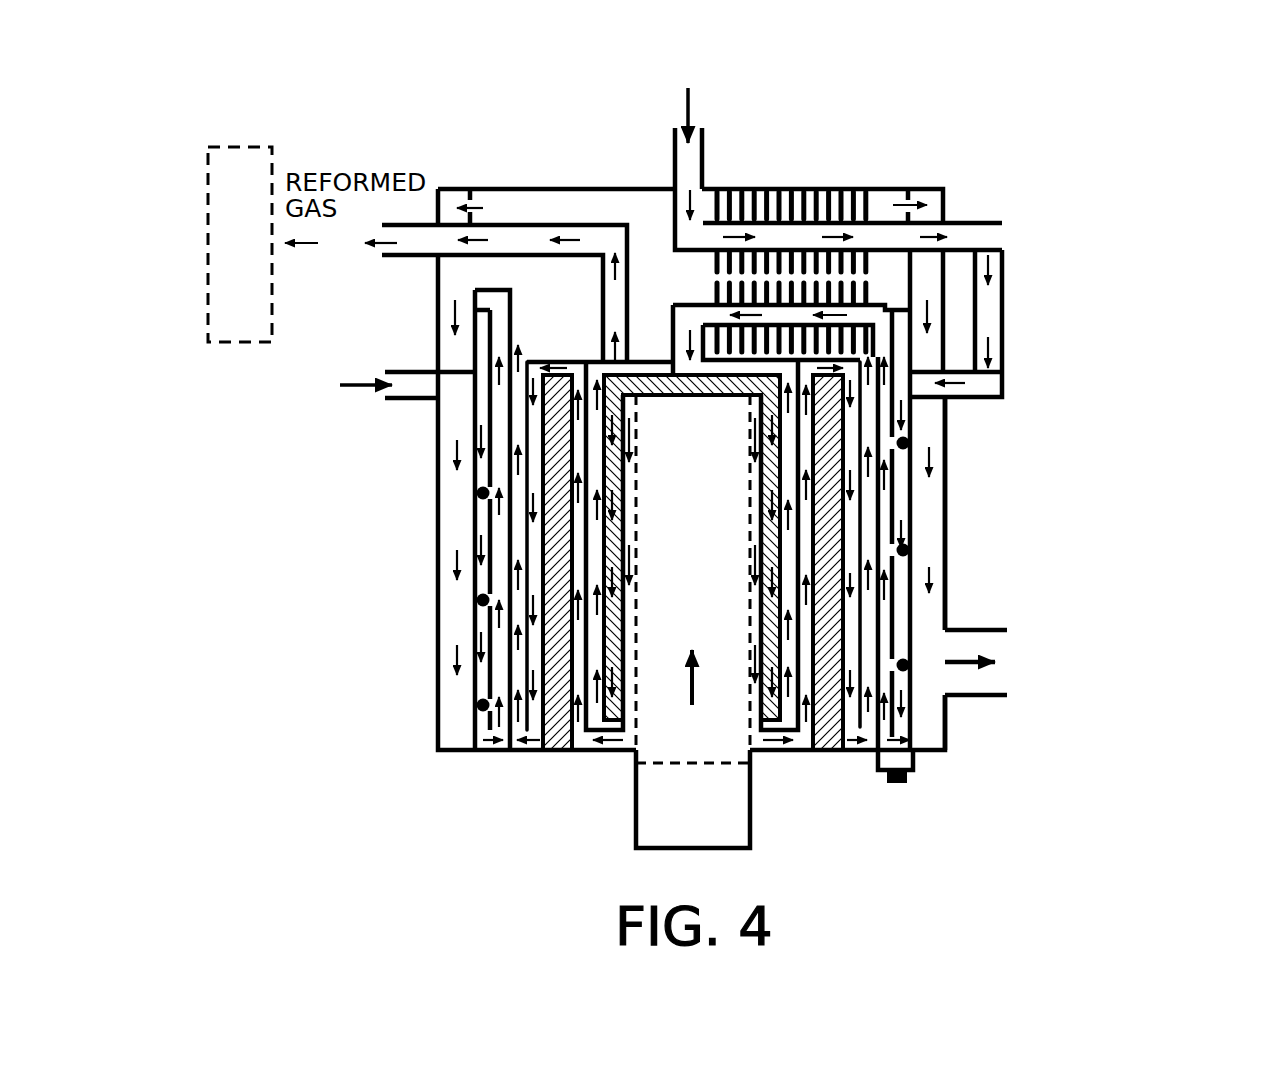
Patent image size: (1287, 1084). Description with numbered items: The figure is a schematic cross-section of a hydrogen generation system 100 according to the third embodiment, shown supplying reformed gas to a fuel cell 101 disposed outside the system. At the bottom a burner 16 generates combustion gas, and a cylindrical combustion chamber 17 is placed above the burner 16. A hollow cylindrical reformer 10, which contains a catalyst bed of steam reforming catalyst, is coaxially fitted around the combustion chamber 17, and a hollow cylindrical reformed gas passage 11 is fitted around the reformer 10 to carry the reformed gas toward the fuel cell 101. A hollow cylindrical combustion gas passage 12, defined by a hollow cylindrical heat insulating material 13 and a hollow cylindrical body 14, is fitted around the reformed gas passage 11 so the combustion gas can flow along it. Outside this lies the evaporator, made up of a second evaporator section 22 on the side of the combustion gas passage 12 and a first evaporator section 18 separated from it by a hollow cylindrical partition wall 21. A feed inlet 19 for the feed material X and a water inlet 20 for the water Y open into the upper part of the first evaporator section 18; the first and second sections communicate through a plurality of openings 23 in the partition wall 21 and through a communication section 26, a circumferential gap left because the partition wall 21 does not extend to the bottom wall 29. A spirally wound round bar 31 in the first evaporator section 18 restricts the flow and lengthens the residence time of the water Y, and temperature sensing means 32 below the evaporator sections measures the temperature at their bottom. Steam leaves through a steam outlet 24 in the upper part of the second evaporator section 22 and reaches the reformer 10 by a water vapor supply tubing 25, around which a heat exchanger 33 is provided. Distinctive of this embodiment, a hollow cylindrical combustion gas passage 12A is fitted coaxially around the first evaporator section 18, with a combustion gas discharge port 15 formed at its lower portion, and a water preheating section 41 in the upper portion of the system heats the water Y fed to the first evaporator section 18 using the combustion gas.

The hydrogen generation system 100 is at (500, 145).
The fuel cell 101 is at (238, 143).
The reformer 10 is at (598, 442).
The reformed gas passage 11 is at (600, 550).
The combustion gas passage 12 is at (578, 565).
The combustion gas passage 12A is at (893, 413).
The heat insulating material 13 is at (552, 620).
The hollow cylindrical body 14 is at (527, 680).
The combustion gas discharge port 15 is at (985, 648).
The burner 16 is at (735, 797).
The combustion chamber 17 is at (660, 495).
The first evaporator section 18 is at (900, 352).
The feed inlet 19 is at (395, 382).
The water inlet 20 is at (690, 168).
The partition wall 21 is at (867, 583).
The second evaporator section 22 is at (883, 613).
The openings 23 is at (490, 417).
The steam outlet 24 is at (870, 298).
The water vapor supply tubing 25 is at (787, 317).
The communication section 26 is at (490, 740).
The bottom wall 29 is at (523, 753).
The spirally wound round bar 31 is at (915, 675).
The temperature sensing means 32 is at (897, 760).
The heat exchanger 33 is at (852, 317).
The water preheating section 41 is at (760, 203).